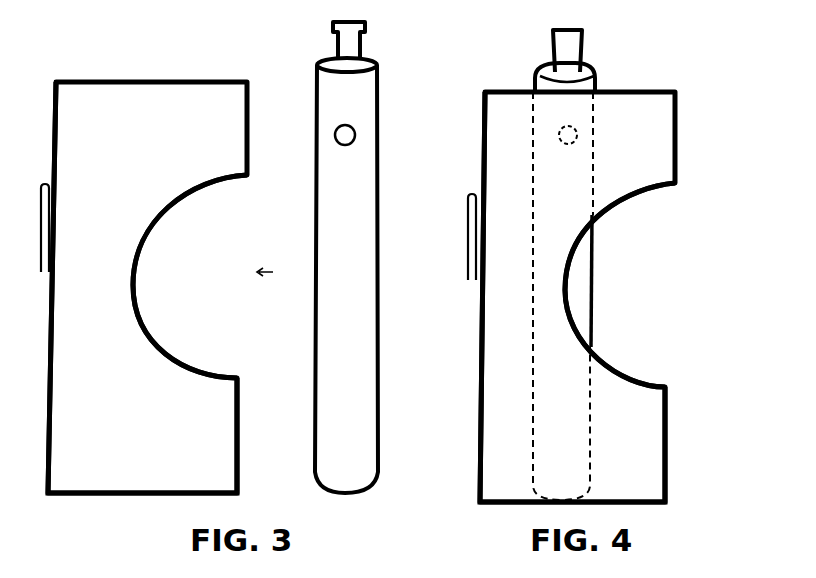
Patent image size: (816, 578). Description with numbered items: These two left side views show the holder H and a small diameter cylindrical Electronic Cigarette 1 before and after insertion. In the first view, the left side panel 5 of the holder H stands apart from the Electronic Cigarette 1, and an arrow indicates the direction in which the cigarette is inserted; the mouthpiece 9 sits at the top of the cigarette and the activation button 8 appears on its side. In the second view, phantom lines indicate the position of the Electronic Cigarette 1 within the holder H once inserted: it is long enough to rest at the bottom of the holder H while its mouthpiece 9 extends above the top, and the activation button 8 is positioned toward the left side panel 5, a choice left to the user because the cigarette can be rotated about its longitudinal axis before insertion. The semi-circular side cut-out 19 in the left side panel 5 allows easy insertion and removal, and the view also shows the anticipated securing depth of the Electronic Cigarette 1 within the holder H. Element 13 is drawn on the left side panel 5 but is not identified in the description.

In FIG. 3, the small diameter Electronic Cigarette 1 is at (357, 193).
In FIG. 4, the small diameter Electronic Cigarette 1 is at (580, 290).
In FIG. 3, the left side panel 5 is at (188, 104).
In FIG. 4, the left side panel 5 is at (633, 131).
In FIG. 3, the activation button 8 is at (348, 134).
In FIG. 4, the activation button 8 is at (576, 138).
In FIG. 3, the mouthpiece 9 is at (354, 40).
In FIG. 4, the mouthpiece 9 is at (566, 50).
In FIG. 3, the fastening element 13 is at (41, 266).
In FIG. 4, the fastening element 13 is at (468, 244).
In FIG. 3, the semi-circular side cut-outs 19 is at (195, 253).
In FIG. 4, the semi-circular side cut-outs 19 is at (637, 261).
In FIG. 3, the holder H is at (197, 393).
In FIG. 4, the holder H is at (637, 436).